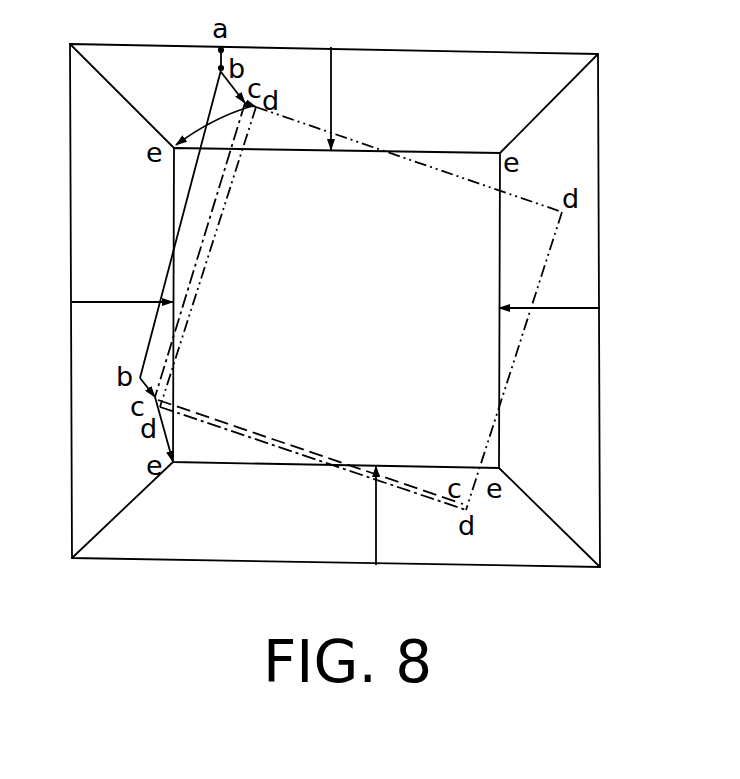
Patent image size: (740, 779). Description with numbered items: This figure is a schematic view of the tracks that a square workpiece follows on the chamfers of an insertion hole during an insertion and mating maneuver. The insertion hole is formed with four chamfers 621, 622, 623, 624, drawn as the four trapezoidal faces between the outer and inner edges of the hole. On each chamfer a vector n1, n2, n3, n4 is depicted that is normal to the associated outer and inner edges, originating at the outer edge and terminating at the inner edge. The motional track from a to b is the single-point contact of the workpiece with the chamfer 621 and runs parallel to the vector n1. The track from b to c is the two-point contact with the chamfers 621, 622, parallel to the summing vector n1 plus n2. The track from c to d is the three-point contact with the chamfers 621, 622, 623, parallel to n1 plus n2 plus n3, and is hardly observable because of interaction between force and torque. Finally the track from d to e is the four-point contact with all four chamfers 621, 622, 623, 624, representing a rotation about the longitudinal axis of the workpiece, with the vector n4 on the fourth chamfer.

The first chamfer 621 is at (334, 98).
The second chamfer 622 is at (122, 301).
The third chamfer 623 is at (336, 514).
The fourth chamfer 624 is at (549, 310).
The normal vector of first chamfer n1 is at (349, 98).
The normal vector of second chamfer n2 is at (122, 284).
The normal vector of third chamfer n3 is at (394, 515).
The normal vector of fourth chamfer n4 is at (549, 296).